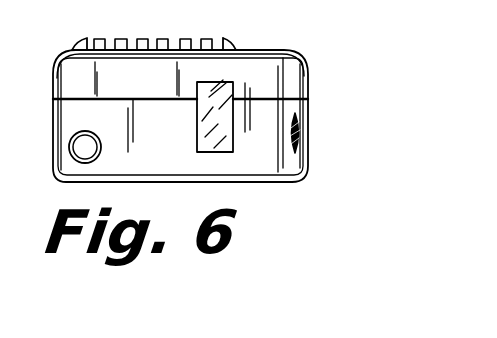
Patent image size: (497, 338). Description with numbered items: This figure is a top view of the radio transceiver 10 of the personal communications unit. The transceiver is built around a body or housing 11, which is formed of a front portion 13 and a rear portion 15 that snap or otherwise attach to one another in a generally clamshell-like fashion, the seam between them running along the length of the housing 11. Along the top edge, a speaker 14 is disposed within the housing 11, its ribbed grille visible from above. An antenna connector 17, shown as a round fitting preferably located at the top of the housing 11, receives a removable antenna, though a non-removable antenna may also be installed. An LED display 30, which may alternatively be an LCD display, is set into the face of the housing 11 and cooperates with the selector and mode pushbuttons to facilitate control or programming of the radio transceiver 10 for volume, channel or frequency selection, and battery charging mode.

The radio transceiver 10 is at (317, 158).
The housing 11 is at (56, 80).
The front portion 13 is at (250, 62).
The speaker 14 is at (168, 42).
The rear portion 15 is at (58, 124).
The antenna connector 17 is at (82, 152).
The LED display 30 is at (224, 141).